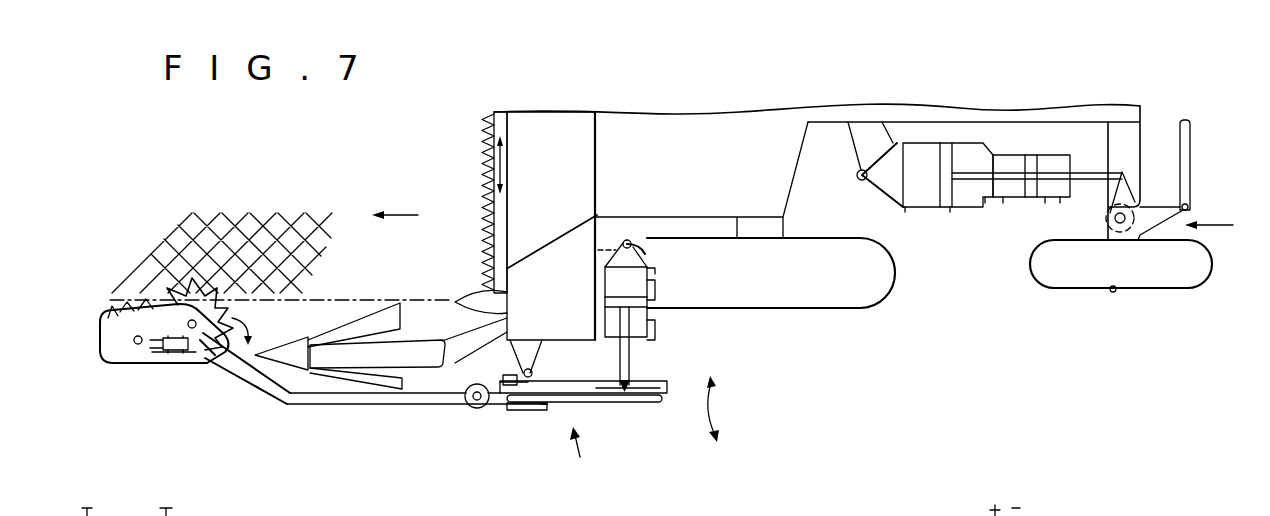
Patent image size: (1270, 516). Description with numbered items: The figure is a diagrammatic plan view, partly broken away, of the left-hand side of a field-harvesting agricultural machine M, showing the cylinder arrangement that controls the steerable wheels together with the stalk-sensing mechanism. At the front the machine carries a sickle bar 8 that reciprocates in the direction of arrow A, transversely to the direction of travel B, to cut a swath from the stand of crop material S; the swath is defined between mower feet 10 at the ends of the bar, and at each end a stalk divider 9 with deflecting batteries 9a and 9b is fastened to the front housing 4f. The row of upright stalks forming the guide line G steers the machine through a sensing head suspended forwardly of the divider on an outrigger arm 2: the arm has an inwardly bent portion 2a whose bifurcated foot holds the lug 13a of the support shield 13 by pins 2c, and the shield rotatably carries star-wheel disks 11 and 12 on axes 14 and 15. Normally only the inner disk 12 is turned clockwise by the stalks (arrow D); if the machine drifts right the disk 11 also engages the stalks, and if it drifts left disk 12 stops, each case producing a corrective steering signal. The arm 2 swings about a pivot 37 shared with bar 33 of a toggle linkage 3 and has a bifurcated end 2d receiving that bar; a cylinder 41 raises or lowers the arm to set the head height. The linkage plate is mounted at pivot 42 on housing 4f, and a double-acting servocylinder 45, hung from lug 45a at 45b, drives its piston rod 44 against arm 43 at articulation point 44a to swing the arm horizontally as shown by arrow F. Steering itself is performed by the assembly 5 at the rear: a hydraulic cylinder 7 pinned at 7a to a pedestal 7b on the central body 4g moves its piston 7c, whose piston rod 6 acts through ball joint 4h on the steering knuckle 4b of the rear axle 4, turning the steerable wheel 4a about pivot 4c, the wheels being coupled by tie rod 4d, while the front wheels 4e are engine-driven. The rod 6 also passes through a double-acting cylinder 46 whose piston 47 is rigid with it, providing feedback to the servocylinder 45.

The outrigger arm 2 is at (336, 403).
The inwardly bent portion 2a is at (246, 372).
The pins 2c is at (157, 368).
The bifurcated end 2d is at (540, 408).
The toggle linkage 3 is at (576, 457).
The rear axle 4 is at (1128, 146).
The steerable wheel 4a is at (1063, 270).
The steering knuckle 4b is at (1156, 212).
The pivot 4c is at (1114, 220).
The tie rod 4d is at (1192, 165).
The engine-driven wheel 4e is at (818, 298).
The housing 4f is at (583, 233).
The central body 4g is at (803, 112).
The ball joint 4h is at (1127, 177).
The steering assembly 5 is at (1217, 215).
The piston rod 6 is at (960, 208).
The hydraulic cylinder 7 is at (926, 207).
The pin 7a is at (860, 182).
The pedestal 7b is at (853, 140).
The piston 7c is at (943, 150).
The sickle bar 8 is at (487, 115).
The stalk divider 9 is at (283, 363).
The deflecting battery 9a is at (376, 322).
The deflecting battery 9b is at (398, 383).
The mower foot 10 is at (460, 300).
The disk 11 is at (117, 310).
The disk 12 is at (207, 366).
The support shield 13 is at (170, 355).
The lug 13a is at (163, 347).
The axis 14 is at (190, 314).
The axis 15 is at (168, 300).
The bar 33 is at (586, 402).
The pivot 37 is at (512, 412).
The cylinder 41 is at (473, 410).
The pivot 42 is at (532, 373).
The arm 43 is at (613, 398).
The piston rod 44 is at (630, 350).
The articulation point 44a is at (600, 388).
The servocylinder 45 is at (650, 317).
The lug 45a is at (612, 240).
The pivot connection 45b is at (648, 252).
The double-acting cylinder 46 is at (1010, 158).
The piston 47 is at (1033, 188).
The arrow A is at (503, 163).
The arrow B is at (406, 215).
The arrow D is at (244, 336).
The arrow F is at (716, 404).
The guide line G is at (284, 300).
The agricultural machine M is at (732, 128).
The stand of crop material S is at (286, 245).